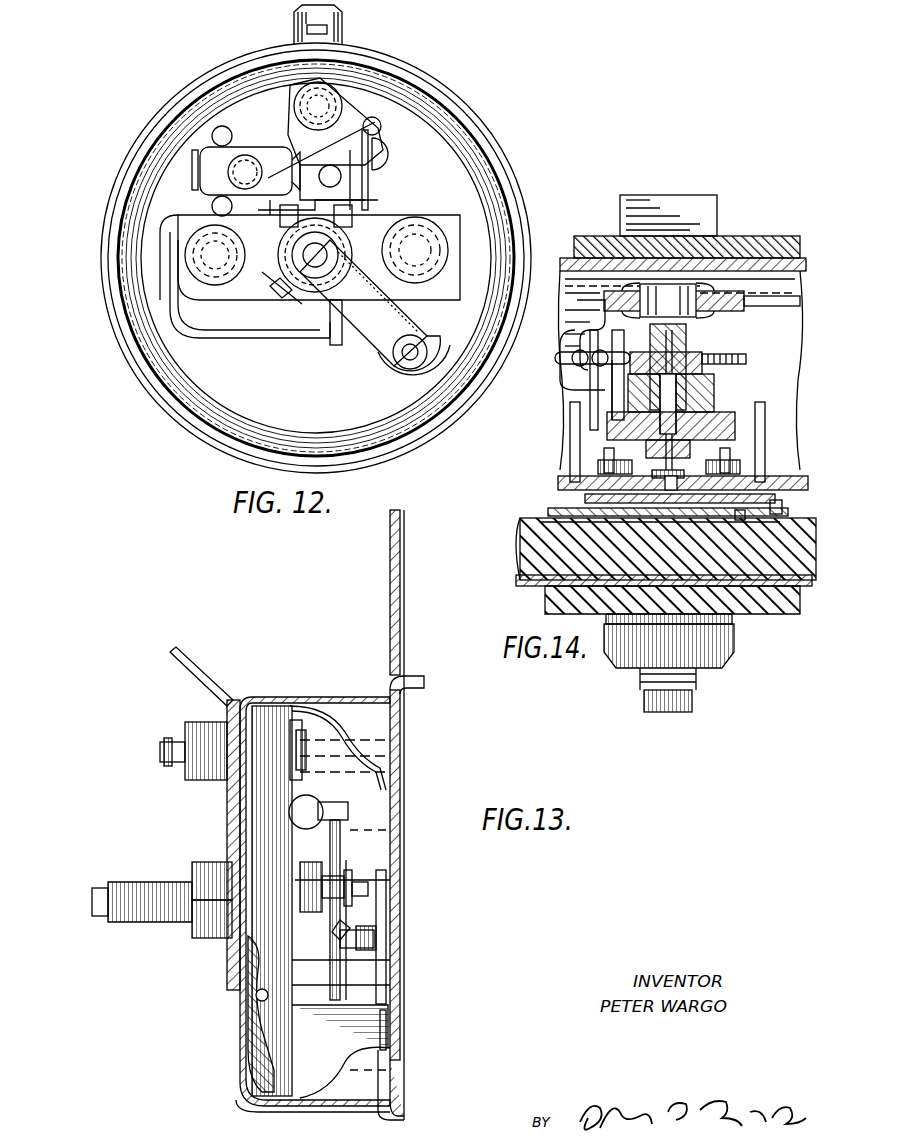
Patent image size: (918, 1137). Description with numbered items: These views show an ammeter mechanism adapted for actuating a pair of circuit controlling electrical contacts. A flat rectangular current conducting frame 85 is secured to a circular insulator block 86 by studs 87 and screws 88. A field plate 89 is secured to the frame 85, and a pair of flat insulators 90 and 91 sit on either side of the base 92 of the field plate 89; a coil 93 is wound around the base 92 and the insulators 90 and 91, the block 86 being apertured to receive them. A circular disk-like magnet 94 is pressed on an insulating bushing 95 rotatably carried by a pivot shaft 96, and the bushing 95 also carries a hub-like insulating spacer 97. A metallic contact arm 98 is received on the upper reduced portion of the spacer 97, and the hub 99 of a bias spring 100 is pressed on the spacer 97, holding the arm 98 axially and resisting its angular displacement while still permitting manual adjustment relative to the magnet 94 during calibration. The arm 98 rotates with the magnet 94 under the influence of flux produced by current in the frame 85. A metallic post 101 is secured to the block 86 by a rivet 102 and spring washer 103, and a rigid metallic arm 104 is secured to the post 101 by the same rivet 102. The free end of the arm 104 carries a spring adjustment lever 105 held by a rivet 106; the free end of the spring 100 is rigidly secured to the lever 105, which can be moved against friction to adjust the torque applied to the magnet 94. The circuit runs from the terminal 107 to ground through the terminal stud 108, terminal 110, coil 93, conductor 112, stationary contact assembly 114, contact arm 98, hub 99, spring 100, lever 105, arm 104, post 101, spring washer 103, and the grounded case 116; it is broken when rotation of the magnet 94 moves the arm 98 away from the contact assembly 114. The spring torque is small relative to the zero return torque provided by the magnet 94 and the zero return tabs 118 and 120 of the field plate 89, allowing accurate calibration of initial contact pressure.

In FIG. 12, the current conducting frame 85 is at (462, 289).
In FIG. 12, the insulator block 86 is at (512, 205).
In FIG. 14, the insulator block 86 is at (800, 552).
In FIG. 13, the insulator block 86 is at (240, 1056).
In FIG. 12, the studs 87 is at (450, 244).
In FIG. 13, the studs 87 is at (100, 888).
In FIG. 13, the screws 88 is at (194, 866).
In FIG. 14, the field plate 89 is at (590, 498).
In FIG. 14, the flat insulator 90 is at (560, 480).
In FIG. 14, the flat insulator 91 is at (560, 512).
In FIG. 14, the base of the field plate 92 is at (790, 516).
In FIG. 12, the coil 93 is at (370, 205).
In FIG. 14, the coil 93 is at (530, 532).
In FIG. 14, the magnet 94 is at (740, 425).
In FIG. 13, the magnet 94 is at (312, 882).
In FIG. 14, the insulating bushing 95 is at (688, 330).
In FIG. 14, the pivot shaft 96 is at (720, 470).
In FIG. 14, the insulating spacer 97 is at (712, 396).
In FIG. 12, the contact arm 98 is at (386, 136).
In FIG. 14, the contact arm 98 is at (612, 418).
In FIG. 13, the contact arm 98 is at (342, 852).
In FIG. 14, the hub 99 is at (700, 356).
In FIG. 14, the bias spring 100 is at (748, 358).
In FIG. 12, the metallic post 101 is at (396, 384).
In FIG. 13, the metallic post 101 is at (392, 1046).
In FIG. 12, the rivet 102 is at (426, 346).
In FIG. 13, the rivet 102 is at (388, 1000).
In FIG. 13, the spring washer 103 is at (250, 1026).
In FIG. 12, the rigid metallic arm 104 is at (366, 344).
In FIG. 13, the rigid metallic arm 104 is at (380, 940).
In FIG. 12, the spring adjustment lever 105 is at (285, 302).
In FIG. 14, the spring adjustment lever 105 is at (570, 360).
In FIG. 13, the spring adjustment lever 105 is at (372, 922).
In FIG. 12, the rivet 106 is at (320, 278).
In FIG. 14, the rivet 106 is at (640, 296).
In FIG. 13, the terminal 107 is at (196, 672).
In FIG. 12, the terminal stud 108 is at (355, 100).
In FIG. 14, the terminal stud 108 is at (692, 700).
In FIG. 13, the terminal stud 108 is at (160, 752).
In FIG. 12, the terminal 110 is at (380, 122).
In FIG. 12, the conductor 112 is at (172, 312).
In FIG. 12, the stationary contact assembly 114 is at (254, 130).
In FIG. 14, the stationary contact assembly 114 is at (604, 422).
In FIG. 13, the stationary contact assembly 114 is at (322, 793).
In FIG. 12, the grounded case 116 is at (150, 130).
In FIG. 14, the grounded case 116 is at (518, 581).
In FIG. 13, the grounded case 116 is at (244, 1094).
In FIG. 14, the zero return tab 118 is at (580, 456).
In FIG. 14, the zero return tab 120 is at (768, 436).